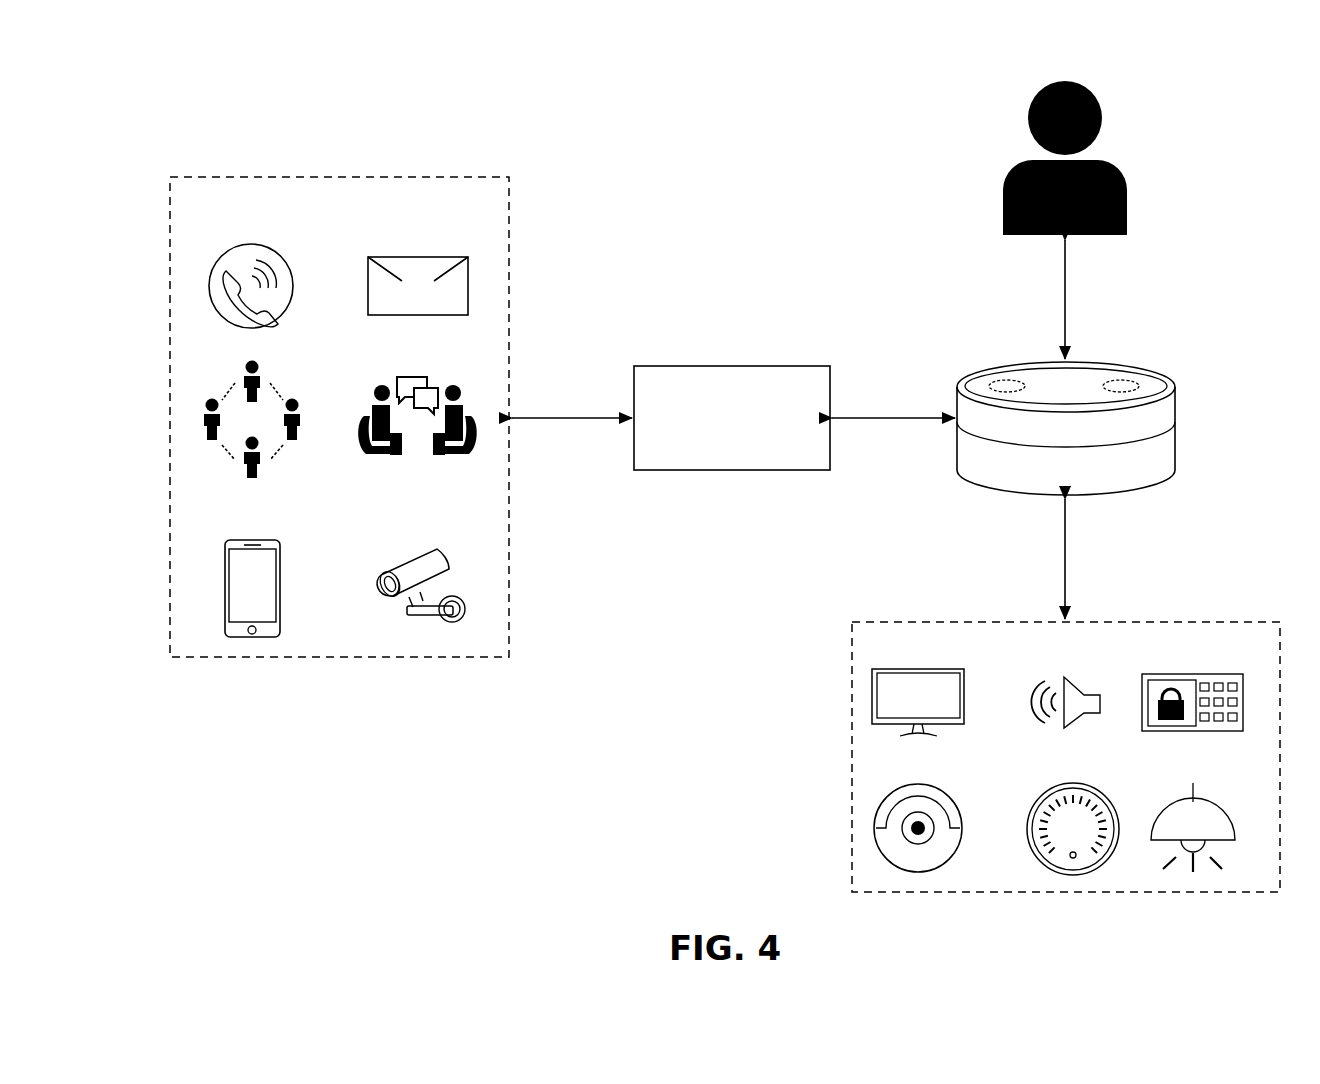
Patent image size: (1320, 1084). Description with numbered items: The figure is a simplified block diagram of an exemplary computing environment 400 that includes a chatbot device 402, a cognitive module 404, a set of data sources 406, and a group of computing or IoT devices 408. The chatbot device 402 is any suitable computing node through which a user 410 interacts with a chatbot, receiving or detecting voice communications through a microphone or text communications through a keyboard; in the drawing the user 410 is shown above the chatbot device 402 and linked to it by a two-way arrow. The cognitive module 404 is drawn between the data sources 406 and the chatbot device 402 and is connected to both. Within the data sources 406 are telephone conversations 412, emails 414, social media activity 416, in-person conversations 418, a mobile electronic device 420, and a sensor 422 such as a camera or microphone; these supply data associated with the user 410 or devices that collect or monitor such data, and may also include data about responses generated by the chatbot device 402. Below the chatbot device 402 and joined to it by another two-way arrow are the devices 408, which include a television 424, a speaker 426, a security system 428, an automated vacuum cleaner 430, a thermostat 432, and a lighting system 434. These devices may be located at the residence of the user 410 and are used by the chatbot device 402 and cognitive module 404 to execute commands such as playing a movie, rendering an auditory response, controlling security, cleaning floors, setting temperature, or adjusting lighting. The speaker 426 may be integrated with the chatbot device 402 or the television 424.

The computing environment 400 is at (165, 124).
The chatbot device 402 is at (1147, 370).
The cognitive module 404 is at (802, 365).
The data sources 406 is at (478, 177).
The computing devices 408 is at (1252, 621).
The user 410 is at (1073, 82).
The telephone conversations 412 is at (250, 245).
The emails 414 is at (440, 256).
The social media activity 416 is at (281, 398).
The in-person conversations 418 is at (436, 389).
The mobile electronic device 420 is at (267, 538).
The sensor 422 is at (432, 553).
The television 424 is at (937, 668).
The speaker 426 is at (1087, 693).
The security system 428 is at (1215, 675).
The automated vacuum cleaner 430 is at (942, 792).
The thermostat 432 is at (1102, 791).
The lighting system 434 is at (1218, 813).